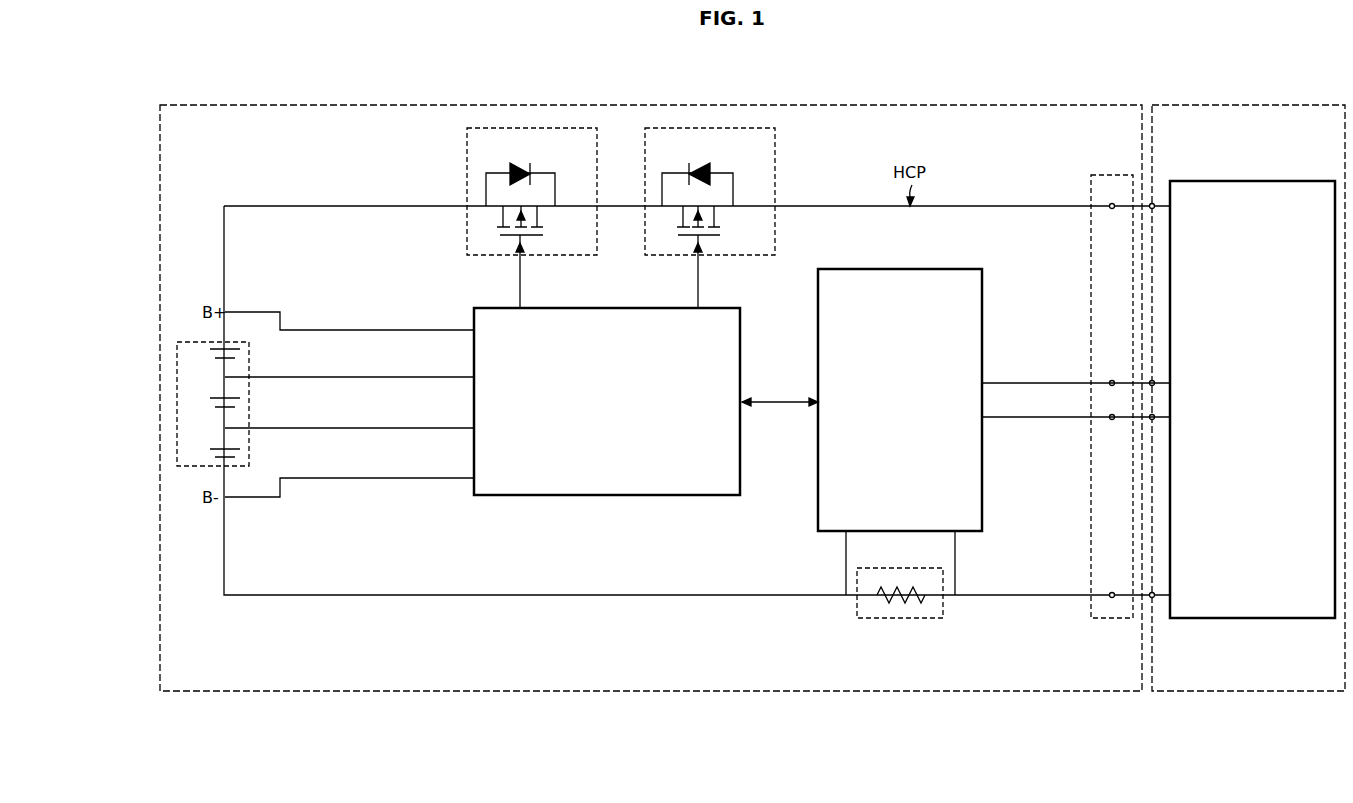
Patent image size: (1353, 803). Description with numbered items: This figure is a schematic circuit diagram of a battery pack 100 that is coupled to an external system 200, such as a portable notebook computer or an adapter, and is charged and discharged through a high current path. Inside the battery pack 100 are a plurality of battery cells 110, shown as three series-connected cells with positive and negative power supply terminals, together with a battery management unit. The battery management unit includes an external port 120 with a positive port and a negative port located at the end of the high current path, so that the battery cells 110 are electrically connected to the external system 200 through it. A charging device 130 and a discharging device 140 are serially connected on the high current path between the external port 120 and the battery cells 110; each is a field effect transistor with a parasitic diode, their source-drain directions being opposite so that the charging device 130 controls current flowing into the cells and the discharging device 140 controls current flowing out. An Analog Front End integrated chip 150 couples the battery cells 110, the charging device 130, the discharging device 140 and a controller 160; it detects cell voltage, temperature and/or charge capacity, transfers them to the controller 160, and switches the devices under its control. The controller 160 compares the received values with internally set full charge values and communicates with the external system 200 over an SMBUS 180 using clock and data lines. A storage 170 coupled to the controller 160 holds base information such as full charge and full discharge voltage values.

The battery pack 100 is at (649, 104).
The battery cells 110 is at (177, 402).
The external port 120 is at (1093, 175).
The charging device 130 is at (467, 158).
The discharging device 140 is at (778, 160).
The Analog Front End integrated chip 150 is at (742, 340).
The controller 160 is at (898, 268).
The storage 170 is at (905, 618).
The SMBUS 180 is at (1068, 418).
The external system 200 is at (1211, 104).